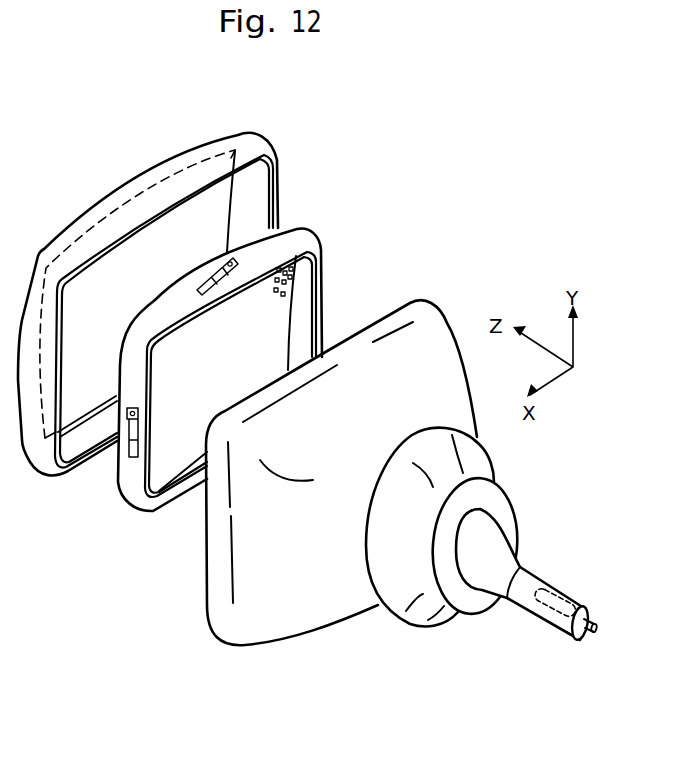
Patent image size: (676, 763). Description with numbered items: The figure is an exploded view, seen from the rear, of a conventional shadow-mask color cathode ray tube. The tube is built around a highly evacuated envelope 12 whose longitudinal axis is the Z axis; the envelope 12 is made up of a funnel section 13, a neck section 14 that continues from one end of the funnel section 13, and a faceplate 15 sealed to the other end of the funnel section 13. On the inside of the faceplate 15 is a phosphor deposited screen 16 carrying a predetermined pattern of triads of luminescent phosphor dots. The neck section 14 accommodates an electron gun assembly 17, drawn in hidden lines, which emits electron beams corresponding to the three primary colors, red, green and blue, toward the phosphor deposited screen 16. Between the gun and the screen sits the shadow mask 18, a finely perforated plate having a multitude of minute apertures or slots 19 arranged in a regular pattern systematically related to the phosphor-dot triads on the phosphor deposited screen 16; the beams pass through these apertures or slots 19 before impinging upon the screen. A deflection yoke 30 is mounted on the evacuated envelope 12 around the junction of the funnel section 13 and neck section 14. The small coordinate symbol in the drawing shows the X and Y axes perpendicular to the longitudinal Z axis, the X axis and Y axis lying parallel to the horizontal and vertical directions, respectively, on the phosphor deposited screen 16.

The evacuated envelope 12 is at (128, 177).
The funnel section 13 is at (448, 387).
The neck section 14 is at (560, 630).
The faceplate 15 is at (279, 160).
The phosphor deposited screen 16 is at (216, 198).
The electron gun assembly 17 is at (540, 608).
The shadow mask 18 is at (307, 280).
The apertures or slots 19 is at (274, 292).
The deflection yoke 30 is at (488, 470).